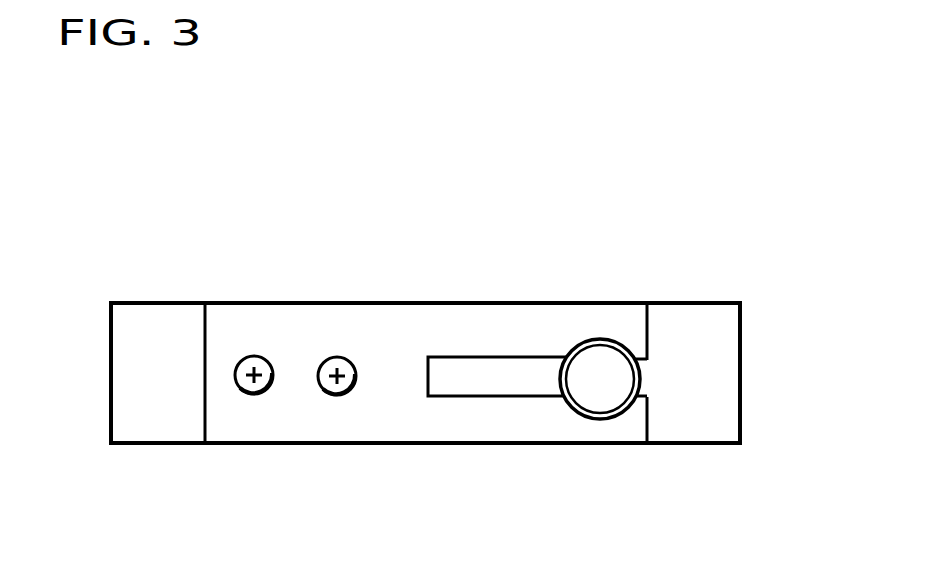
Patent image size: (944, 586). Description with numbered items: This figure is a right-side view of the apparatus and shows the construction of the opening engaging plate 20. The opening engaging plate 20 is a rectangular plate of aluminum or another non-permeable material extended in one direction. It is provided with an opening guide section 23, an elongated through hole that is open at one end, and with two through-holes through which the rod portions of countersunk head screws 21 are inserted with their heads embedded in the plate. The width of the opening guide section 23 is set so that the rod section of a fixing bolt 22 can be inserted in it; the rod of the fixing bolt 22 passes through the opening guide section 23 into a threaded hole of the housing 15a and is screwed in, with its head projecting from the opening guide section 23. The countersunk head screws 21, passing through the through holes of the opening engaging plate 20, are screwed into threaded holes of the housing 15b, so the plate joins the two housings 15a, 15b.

The opening engaging plate 20 is at (310, 318).
The countersunk head screw 21 is at (256, 395).
The fixing bolt 22 is at (610, 400).
The opening guide section 23 is at (495, 397).
The housing 15a is at (740, 358).
The housing 15b is at (110, 360).